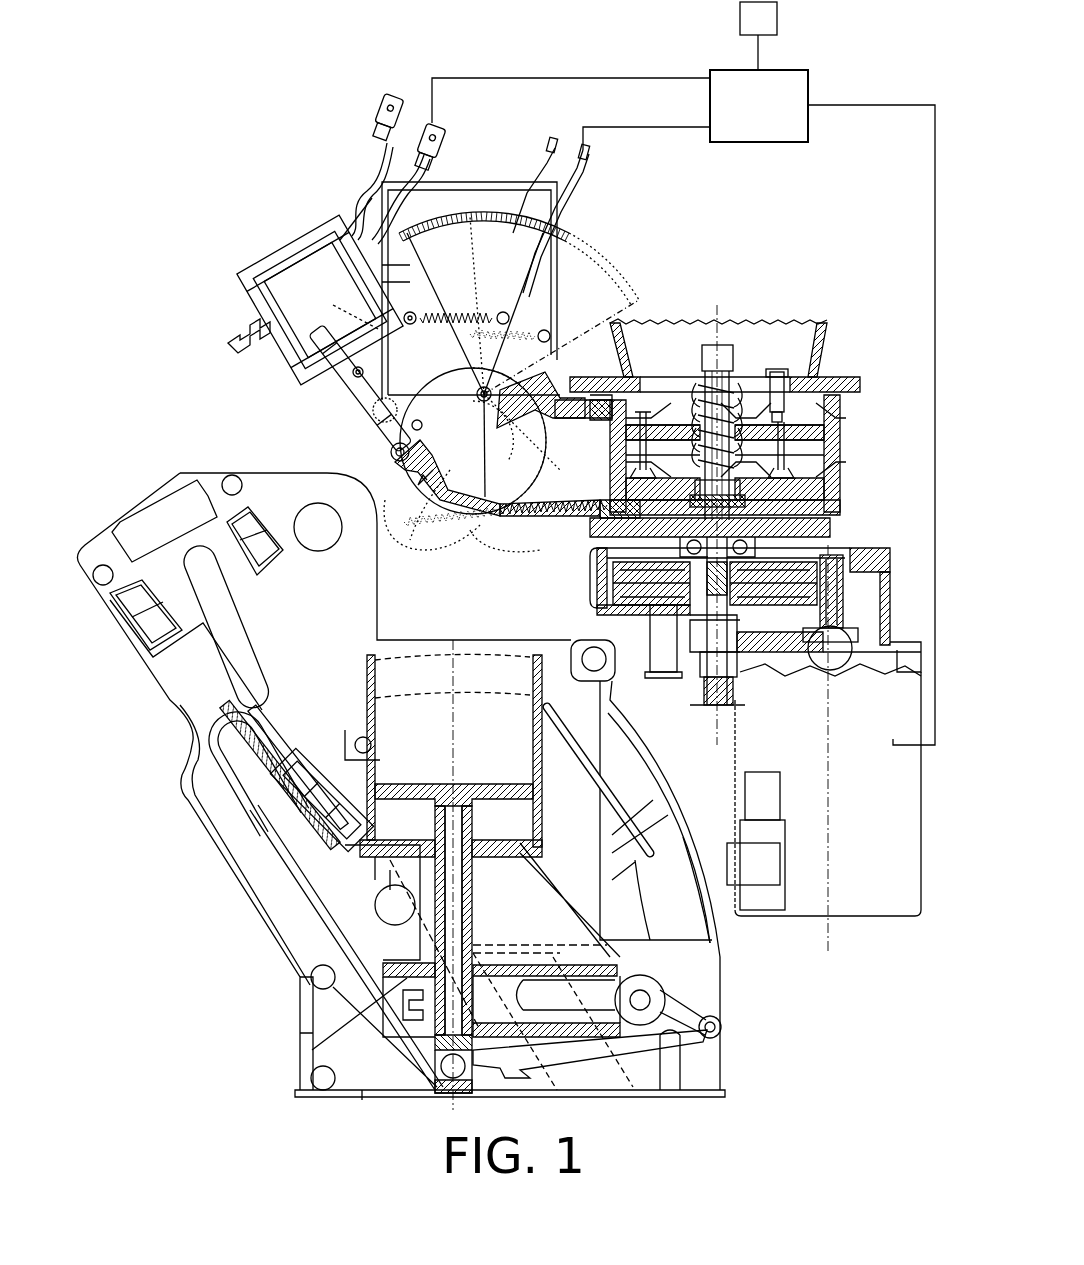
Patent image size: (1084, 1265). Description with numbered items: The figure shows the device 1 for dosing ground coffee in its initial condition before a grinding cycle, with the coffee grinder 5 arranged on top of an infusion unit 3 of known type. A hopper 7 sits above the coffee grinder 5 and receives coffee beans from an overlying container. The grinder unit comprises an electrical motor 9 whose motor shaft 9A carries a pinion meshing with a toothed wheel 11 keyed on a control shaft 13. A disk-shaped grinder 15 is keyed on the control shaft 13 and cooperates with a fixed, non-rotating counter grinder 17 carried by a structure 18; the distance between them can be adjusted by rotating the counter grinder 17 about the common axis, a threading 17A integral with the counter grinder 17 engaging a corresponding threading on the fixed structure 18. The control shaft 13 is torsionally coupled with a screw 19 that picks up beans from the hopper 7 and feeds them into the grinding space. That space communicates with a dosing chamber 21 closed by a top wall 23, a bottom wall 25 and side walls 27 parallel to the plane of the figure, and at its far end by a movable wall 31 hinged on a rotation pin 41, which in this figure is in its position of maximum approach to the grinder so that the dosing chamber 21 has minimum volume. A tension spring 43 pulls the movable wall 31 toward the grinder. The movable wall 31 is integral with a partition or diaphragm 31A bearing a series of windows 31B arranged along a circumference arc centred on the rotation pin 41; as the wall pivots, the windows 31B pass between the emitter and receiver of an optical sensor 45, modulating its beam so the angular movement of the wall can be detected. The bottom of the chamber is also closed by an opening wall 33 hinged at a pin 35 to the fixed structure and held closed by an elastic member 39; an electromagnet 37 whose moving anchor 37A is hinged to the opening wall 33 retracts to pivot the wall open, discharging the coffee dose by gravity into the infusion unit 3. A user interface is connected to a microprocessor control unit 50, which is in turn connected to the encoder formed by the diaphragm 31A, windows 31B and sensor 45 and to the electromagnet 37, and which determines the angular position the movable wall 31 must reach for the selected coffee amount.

The device for dosing ground coffee 1 is at (860, 260).
The infusion unit 3 is at (360, 658).
The coffee grinder 5 is at (900, 446).
The hopper 7 is at (802, 352).
The electrical motor 9 is at (875, 918).
The motor shaft 9A is at (843, 580).
The toothed wheel 11 is at (615, 582).
The control shaft 13 is at (698, 670).
The grinder 15 is at (805, 492).
The counter grinder 17 is at (810, 440).
The threading 17A is at (838, 396).
The fixed structure 18 is at (815, 464).
The screw 19 is at (735, 367).
The dosing chamber 21 is at (599, 445).
The top wall 23 is at (565, 420).
The bottom wall 25 is at (522, 514).
The side walls 27 is at (588, 465).
The movable wall 31 is at (483, 487).
The partition or diaphragm 31A is at (546, 270).
The windows 31B is at (474, 220).
The opening wall 33 is at (482, 530).
The pin 35 is at (405, 420).
The electromagnet 37 is at (320, 383).
The moving anchor 37A is at (348, 373).
The elastic member 39 is at (392, 452).
The rotation pin 41 is at (477, 394).
The tension spring 43 is at (453, 313).
The optical sensor 45 is at (546, 225).
The microprocessor 50 is at (758, 143).